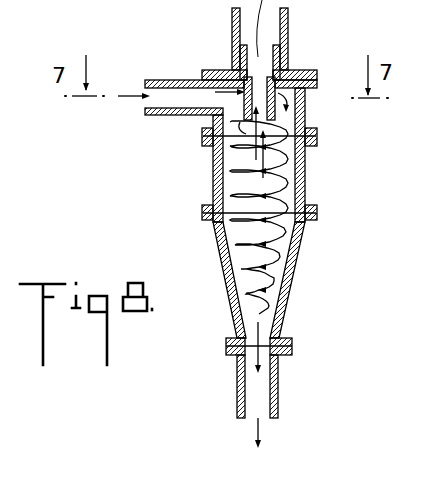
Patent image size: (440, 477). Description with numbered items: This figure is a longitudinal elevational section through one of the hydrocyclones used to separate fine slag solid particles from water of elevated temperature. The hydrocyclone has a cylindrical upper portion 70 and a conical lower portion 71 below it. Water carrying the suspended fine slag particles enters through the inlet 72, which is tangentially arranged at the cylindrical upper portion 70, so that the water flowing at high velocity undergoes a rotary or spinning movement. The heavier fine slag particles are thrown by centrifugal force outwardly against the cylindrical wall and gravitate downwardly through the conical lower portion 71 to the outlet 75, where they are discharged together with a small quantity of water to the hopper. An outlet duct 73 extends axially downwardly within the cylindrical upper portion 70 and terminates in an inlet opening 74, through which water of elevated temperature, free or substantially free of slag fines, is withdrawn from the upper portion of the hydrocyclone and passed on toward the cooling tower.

The cylindrical upper portion 70 is at (212, 155).
The conical lower portion 71 is at (290, 270).
The inlet 72 is at (165, 80).
The outlet duct 73 is at (270, 32).
The inlet opening 74 is at (284, 115).
The outlet 75 is at (262, 407).